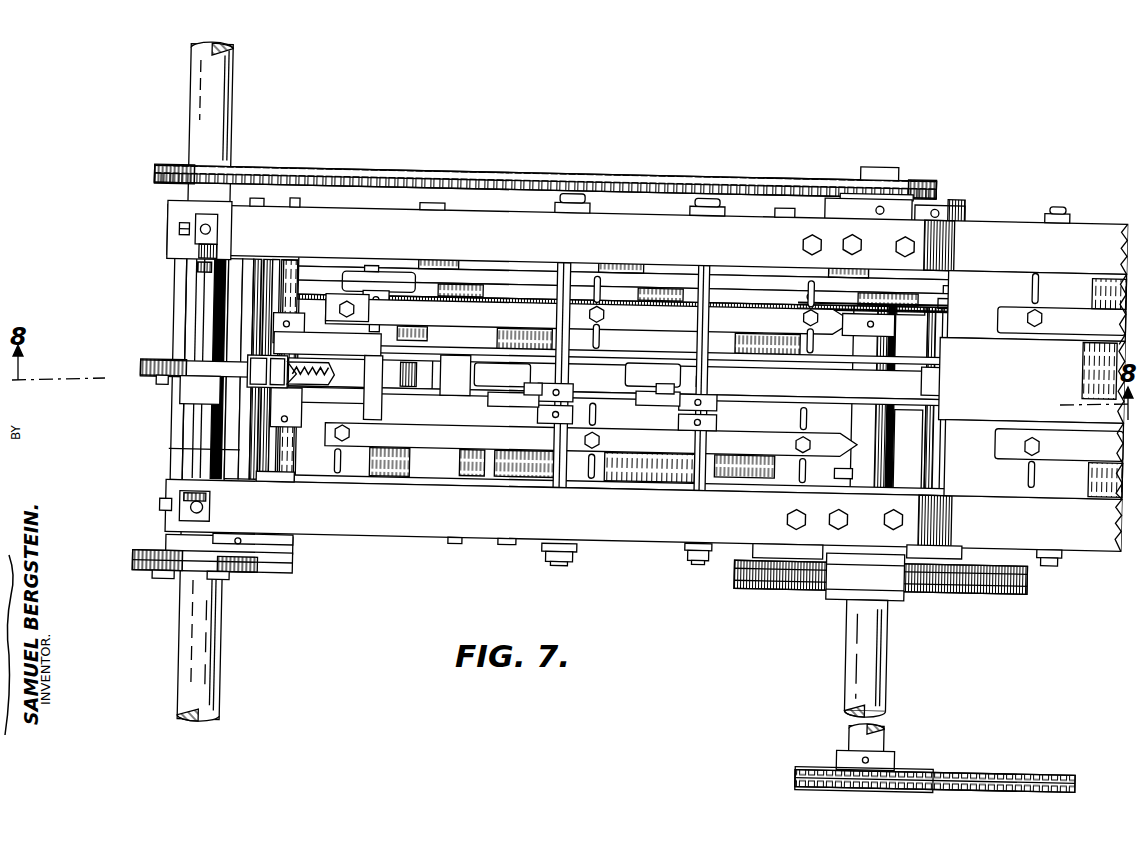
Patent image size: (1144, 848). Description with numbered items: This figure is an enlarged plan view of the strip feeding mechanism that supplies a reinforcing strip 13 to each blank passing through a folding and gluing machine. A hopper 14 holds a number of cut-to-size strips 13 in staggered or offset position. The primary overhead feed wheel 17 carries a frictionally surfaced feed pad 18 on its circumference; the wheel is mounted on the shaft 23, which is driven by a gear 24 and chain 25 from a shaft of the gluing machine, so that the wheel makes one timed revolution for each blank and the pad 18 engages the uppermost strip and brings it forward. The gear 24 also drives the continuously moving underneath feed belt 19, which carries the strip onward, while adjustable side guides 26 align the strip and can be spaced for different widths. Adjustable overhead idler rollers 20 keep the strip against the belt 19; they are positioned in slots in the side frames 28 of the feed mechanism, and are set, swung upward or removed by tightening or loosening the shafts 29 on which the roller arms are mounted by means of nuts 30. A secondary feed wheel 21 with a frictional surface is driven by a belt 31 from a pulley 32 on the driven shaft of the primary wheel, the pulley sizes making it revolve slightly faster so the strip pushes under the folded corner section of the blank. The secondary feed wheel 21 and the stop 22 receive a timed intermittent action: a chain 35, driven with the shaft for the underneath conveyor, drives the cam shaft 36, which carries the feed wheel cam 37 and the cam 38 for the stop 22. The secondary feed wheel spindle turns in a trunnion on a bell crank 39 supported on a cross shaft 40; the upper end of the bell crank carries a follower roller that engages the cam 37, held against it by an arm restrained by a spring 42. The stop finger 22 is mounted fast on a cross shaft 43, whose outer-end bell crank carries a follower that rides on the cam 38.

The strip 13 is at (1032, 381).
The hopper 14 is at (1080, 462).
The primary overhead feed wheel 17 is at (940, 368).
The feed pad 18 is at (982, 366).
The underneath feed belt 19 is at (603, 363).
The overhead idler rollers 20 is at (577, 375).
The secondary feed wheel 21 is at (622, 379).
The stop 22 is at (248, 350).
The shaft 23 is at (845, 460).
The gear 24 is at (992, 578).
The chain 25 is at (975, 757).
The side guides 26 is at (504, 320).
The side frames 28 is at (500, 556).
The shafts 29 is at (557, 480).
The nuts 30 is at (580, 553).
The belt 31 is at (500, 270).
The pulley 32 is at (948, 270).
The chain 35 is at (322, 166).
The cam shaft 36 is at (205, 304).
The feed wheel cam 37 is at (156, 378).
The cam 38 is at (265, 572).
The bell crank 39 is at (316, 328).
The cross shaft 40 is at (290, 482).
The spring 42 is at (314, 400).
The cross shaft 43 is at (180, 449).